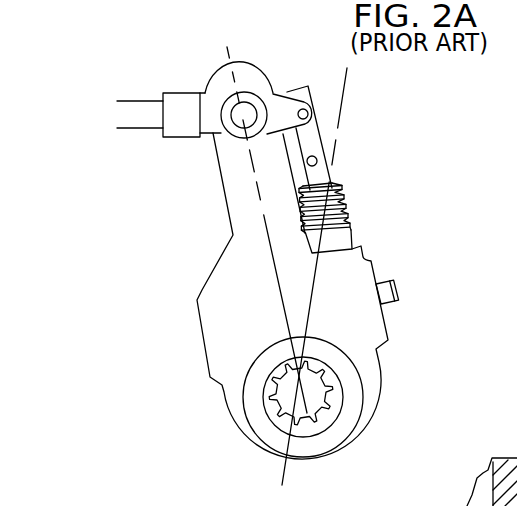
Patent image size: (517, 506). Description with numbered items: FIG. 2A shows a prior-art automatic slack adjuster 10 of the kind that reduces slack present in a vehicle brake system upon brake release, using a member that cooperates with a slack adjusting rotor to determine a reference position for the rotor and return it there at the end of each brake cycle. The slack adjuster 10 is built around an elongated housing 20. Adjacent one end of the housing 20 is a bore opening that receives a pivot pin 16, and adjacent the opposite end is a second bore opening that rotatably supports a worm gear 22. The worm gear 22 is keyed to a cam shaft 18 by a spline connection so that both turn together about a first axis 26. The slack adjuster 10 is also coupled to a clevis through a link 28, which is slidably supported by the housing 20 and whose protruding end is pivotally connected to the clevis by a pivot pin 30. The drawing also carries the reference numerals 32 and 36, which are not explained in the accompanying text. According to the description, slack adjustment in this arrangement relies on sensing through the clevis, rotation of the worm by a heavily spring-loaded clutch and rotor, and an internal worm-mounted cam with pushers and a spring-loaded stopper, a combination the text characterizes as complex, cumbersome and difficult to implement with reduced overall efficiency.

The slack adjuster 10 is at (157, 356).
The pivot pin 16 is at (248, 102).
The cam shaft 18 is at (313, 398).
The housing 20 is at (232, 265).
The worm gear 22 is at (277, 405).
The first axis 26 is at (287, 276).
The link 28 is at (322, 145).
The pivot pin 30 is at (308, 114).
The cam shaft 32 is at (463, 482).
The adjusting screw 36 is at (396, 279).